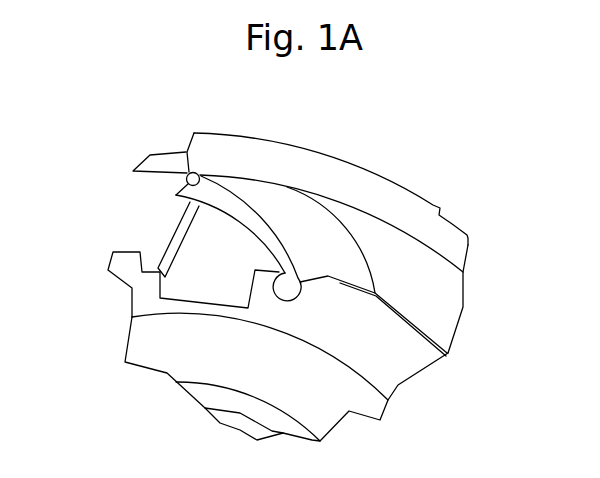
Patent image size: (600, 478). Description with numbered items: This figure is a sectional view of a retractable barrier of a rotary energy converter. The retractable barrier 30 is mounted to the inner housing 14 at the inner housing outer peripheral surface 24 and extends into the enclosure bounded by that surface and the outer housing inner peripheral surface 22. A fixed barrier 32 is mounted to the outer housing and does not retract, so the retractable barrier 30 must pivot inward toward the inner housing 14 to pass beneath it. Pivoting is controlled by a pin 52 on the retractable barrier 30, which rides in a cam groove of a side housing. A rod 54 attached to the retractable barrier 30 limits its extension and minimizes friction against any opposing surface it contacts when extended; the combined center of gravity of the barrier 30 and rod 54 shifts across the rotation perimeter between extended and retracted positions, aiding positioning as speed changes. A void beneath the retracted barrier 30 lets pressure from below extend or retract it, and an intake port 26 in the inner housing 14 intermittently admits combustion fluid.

The inner housing 14 is at (410, 365).
The outer housing inner peripheral surface 22 is at (288, 186).
The inner housing outer peripheral surface 24 is at (362, 269).
The intake port 26 is at (183, 285).
The retractable barrier 30 is at (240, 210).
The fixed barrier 32 is at (442, 303).
The pin 52 is at (191, 172).
The rod 54 is at (171, 236).